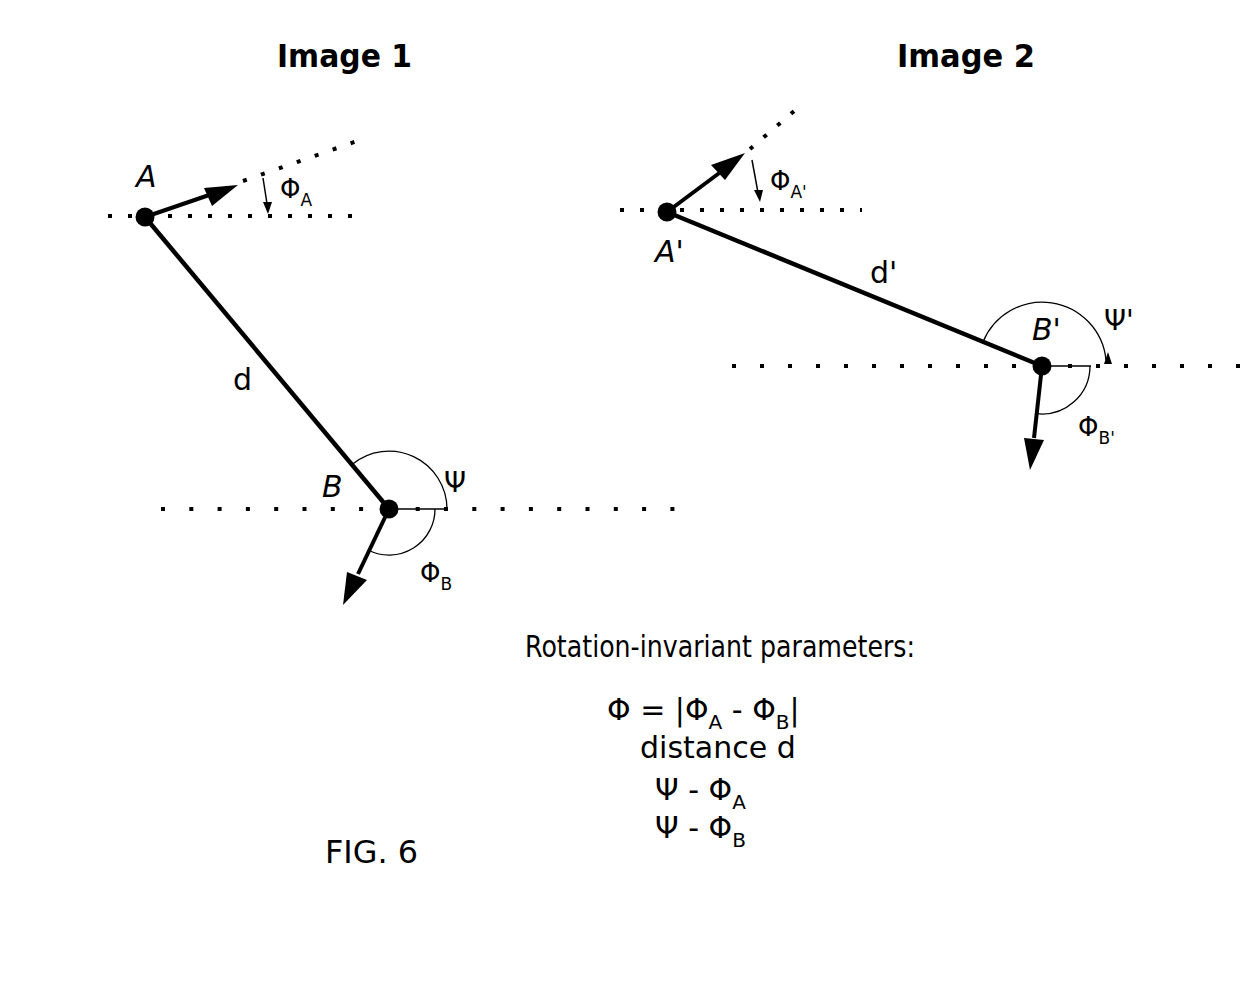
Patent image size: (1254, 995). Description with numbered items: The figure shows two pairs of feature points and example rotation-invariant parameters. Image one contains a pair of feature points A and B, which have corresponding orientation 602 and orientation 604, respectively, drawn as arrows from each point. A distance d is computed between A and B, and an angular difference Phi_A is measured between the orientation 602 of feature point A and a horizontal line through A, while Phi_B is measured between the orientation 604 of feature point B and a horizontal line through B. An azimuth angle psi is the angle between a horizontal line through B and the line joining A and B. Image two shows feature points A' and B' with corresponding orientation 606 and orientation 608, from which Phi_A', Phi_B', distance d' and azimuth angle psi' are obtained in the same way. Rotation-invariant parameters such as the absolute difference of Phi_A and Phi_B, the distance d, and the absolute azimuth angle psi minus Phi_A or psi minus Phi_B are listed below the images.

The orientation of feature point A 602 is at (199, 199).
The orientation of feature point B 604 is at (374, 538).
The orientation of feature point A' 606 is at (692, 192).
The orientation of feature point B' 608 is at (1036, 402).